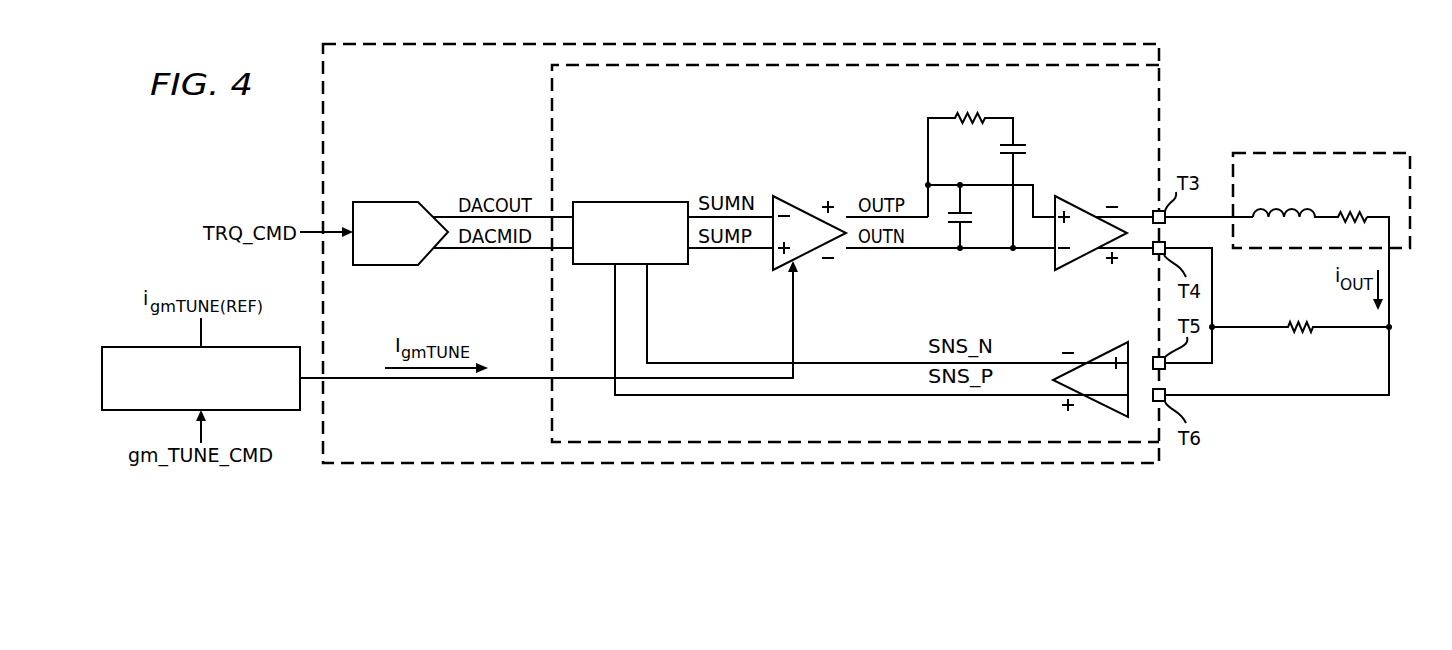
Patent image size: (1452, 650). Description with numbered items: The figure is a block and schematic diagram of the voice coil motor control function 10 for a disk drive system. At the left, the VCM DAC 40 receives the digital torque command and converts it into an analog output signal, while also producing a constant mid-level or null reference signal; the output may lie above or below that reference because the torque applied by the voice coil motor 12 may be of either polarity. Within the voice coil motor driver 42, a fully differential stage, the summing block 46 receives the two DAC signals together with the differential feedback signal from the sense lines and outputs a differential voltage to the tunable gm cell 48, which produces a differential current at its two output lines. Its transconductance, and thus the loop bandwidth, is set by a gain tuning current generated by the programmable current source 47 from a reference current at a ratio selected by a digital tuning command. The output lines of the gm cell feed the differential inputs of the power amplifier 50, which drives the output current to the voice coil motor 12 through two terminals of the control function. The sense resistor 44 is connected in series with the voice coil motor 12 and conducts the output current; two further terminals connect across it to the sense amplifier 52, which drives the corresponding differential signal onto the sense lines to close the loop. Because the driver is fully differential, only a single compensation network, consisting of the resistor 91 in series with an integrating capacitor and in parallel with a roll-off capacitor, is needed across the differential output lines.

The voice coil motor control function 10 is at (315, 145).
The voice coil motor 12 is at (1333, 146).
The VCM DAC 40 is at (380, 202).
The voice coil motor driver 42 is at (545, 123).
The sense resistor 44 is at (1300, 334).
The summing block 46 is at (630, 202).
The programmable current source 47 is at (122, 347).
The tunable gm cell 48 is at (798, 207).
The power amplifier 50 is at (1077, 206).
The sense amplifier 52 is at (1108, 348).
The resistor 91 is at (965, 125).